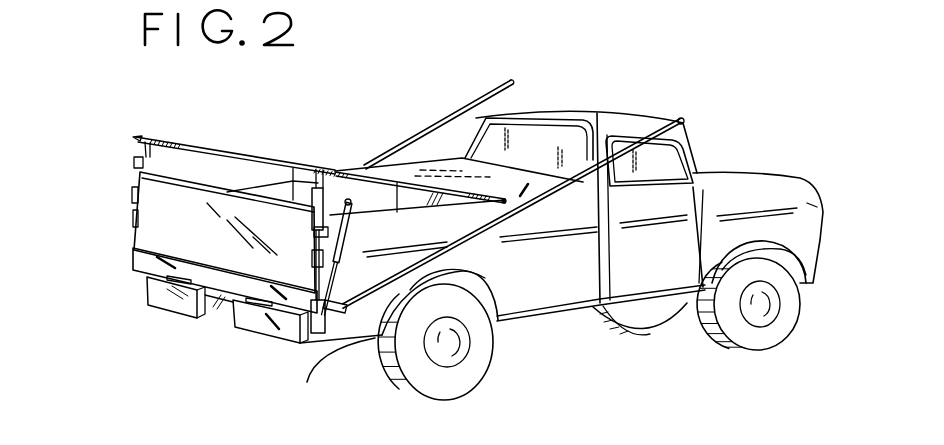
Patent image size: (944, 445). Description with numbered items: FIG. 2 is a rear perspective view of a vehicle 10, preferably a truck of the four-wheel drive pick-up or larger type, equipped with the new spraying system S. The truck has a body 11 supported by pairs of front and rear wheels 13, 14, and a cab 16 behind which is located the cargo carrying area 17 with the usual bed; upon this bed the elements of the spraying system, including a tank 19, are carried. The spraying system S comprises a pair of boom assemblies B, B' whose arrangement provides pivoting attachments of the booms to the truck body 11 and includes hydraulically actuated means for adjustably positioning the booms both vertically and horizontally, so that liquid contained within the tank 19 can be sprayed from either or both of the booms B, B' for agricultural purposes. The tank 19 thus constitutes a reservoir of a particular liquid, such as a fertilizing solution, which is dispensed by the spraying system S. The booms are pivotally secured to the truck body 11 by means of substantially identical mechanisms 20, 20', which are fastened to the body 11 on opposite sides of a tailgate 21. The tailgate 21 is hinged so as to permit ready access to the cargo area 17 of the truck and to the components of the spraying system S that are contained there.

The vehicle 10 is at (737, 157).
The body 11 is at (540, 320).
The front wheels 13 is at (793, 333).
The rear wheels 14 is at (473, 383).
The cab 16 is at (600, 113).
The cargo carrying area 17 is at (257, 185).
The tank 19 is at (428, 157).
The mechanism 20 is at (183, 237).
The mechanism 20' is at (225, 337).
The tailgate 21 is at (203, 240).
The spraying system S is at (252, 112).
The boom assembly B is at (444, 101).
The boom assembly B' is at (532, 186).